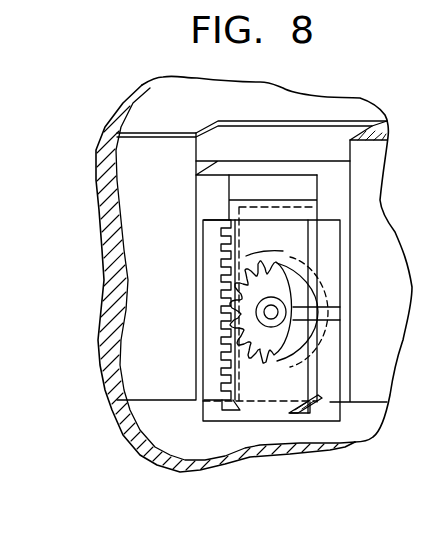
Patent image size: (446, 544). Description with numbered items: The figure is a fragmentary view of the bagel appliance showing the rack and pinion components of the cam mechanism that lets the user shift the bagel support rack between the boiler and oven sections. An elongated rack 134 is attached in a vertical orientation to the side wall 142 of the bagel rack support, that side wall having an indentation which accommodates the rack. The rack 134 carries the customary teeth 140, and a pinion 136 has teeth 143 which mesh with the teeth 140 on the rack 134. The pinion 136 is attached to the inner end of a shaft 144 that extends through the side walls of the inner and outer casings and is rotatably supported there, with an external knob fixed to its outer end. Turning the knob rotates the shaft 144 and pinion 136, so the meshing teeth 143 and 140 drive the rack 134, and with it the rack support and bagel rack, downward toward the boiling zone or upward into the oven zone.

The rack 134 is at (205, 382).
The pinion 136 is at (292, 291).
The teeth 140 is at (233, 403).
The side wall 142 is at (147, 298).
The teeth 143 is at (252, 261).
The shaft 144 is at (307, 325).